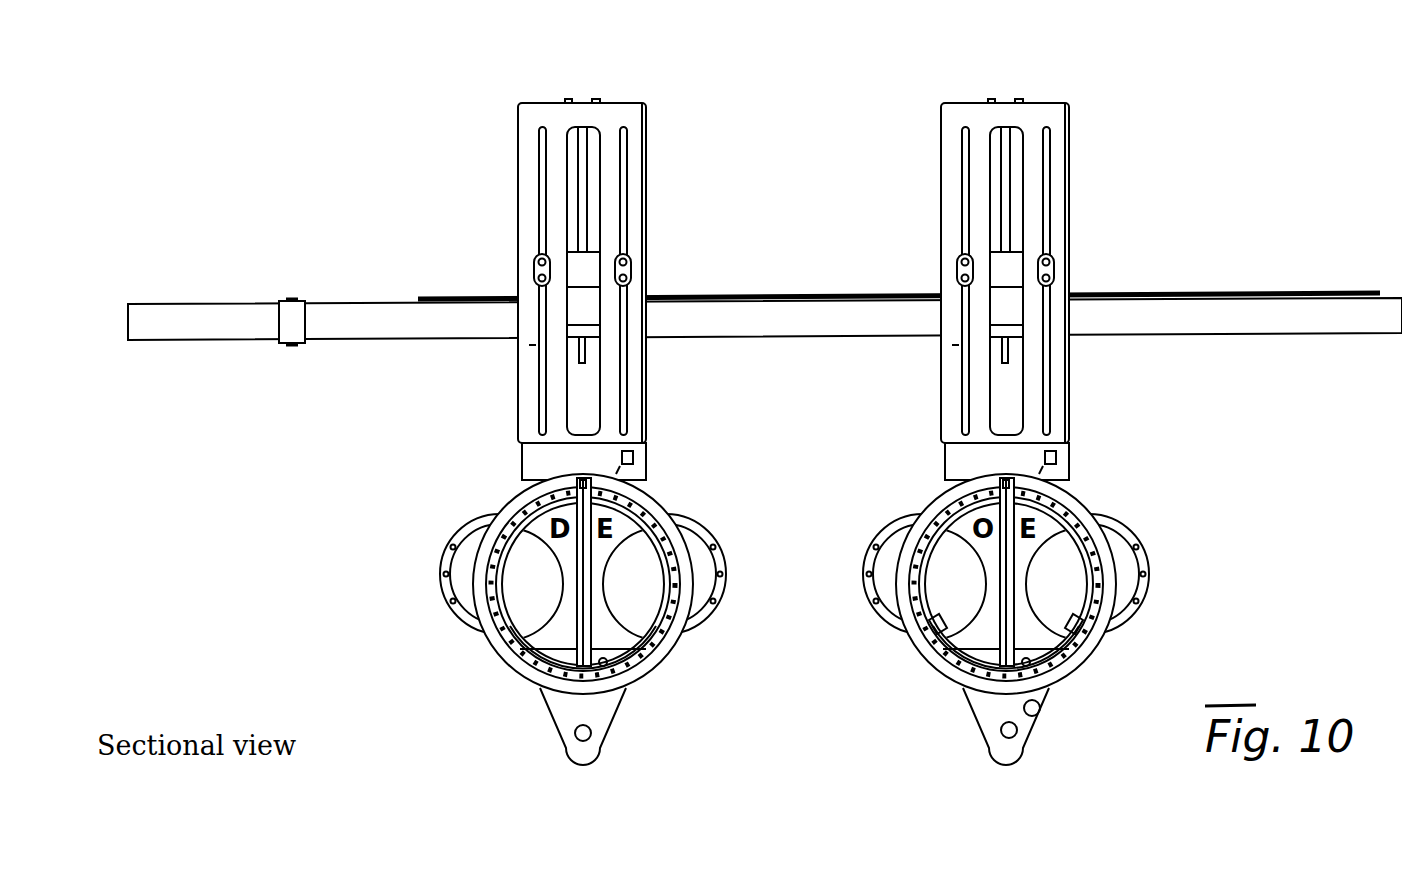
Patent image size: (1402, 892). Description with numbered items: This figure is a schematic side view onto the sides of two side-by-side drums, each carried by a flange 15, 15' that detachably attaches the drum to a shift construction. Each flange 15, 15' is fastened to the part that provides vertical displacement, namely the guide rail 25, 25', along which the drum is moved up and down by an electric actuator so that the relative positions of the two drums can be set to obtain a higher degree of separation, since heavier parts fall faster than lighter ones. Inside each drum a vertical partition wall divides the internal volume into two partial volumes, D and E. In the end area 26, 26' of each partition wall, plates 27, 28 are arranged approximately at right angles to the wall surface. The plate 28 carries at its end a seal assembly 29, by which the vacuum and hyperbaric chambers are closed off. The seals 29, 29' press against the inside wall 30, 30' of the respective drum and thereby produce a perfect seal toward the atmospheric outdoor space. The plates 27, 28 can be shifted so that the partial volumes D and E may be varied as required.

The guide rail 25 is at (1048, 271).
The guide rail 25' is at (634, 271).
The flange 15 is at (1054, 454).
The flange 15' is at (631, 456).
The inside wall 30 is at (1041, 572).
The inside wall 30' is at (623, 572).
The end area of partition wall 26 is at (988, 599).
The end area of partition wall 26' is at (569, 599).
The plate 27 is at (942, 609).
The plate 28 is at (1063, 643).
The seal 29 is at (1087, 664).
The seal 29' is at (876, 644).